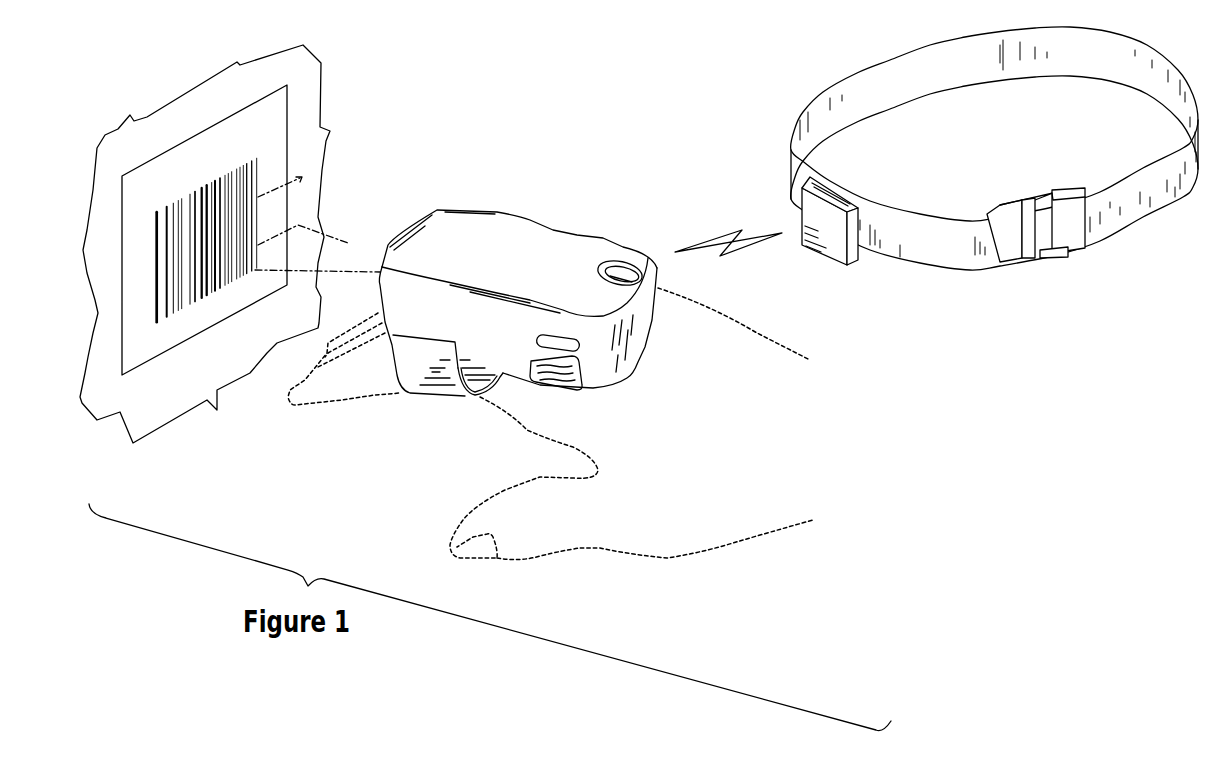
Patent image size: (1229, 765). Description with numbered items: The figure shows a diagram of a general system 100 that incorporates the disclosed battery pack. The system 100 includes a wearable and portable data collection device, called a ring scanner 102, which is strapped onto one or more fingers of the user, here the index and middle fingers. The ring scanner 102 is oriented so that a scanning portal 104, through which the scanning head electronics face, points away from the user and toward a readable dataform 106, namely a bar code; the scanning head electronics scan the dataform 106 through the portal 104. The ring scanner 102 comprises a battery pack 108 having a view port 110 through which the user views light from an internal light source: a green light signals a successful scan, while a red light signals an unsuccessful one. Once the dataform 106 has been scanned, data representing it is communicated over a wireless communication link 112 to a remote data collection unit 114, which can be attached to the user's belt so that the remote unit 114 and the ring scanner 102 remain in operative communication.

The system 100 is at (1005, 452).
The ring scanner 102 is at (514, 202).
The scanning portal 104 is at (399, 225).
The readable dataform 106 is at (257, 180).
The battery pack 108 is at (557, 400).
The view port 110 is at (625, 272).
The wireless communication link 112 is at (723, 231).
The remote data collection unit 114 is at (831, 238).